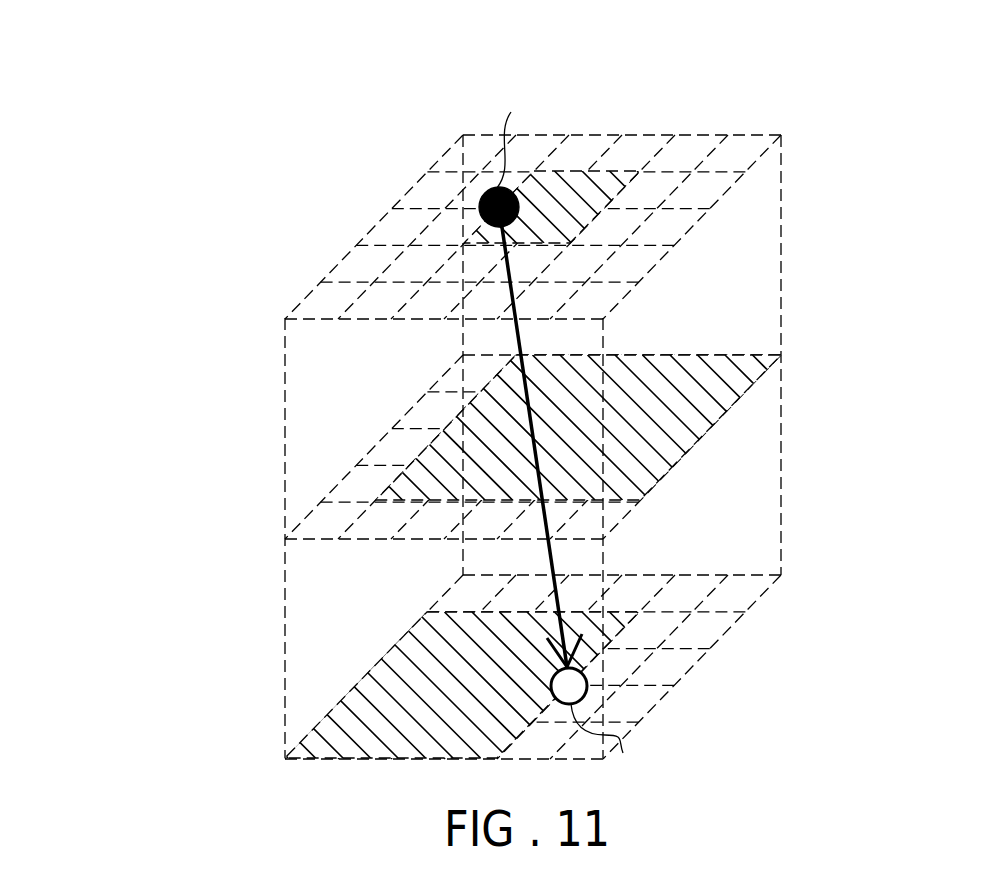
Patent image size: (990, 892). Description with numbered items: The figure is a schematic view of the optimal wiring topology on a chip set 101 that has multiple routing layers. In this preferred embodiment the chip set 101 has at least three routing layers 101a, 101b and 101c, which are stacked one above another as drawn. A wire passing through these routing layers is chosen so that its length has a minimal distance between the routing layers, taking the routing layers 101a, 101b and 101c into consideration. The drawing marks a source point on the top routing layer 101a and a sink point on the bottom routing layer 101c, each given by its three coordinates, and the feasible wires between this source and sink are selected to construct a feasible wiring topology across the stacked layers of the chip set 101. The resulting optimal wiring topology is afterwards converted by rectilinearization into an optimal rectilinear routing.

The chip set 101 is at (555, 407).
The routing layer 101a is at (330, 270).
The routing layer 101b is at (330, 498).
The routing layer 101c is at (330, 716).